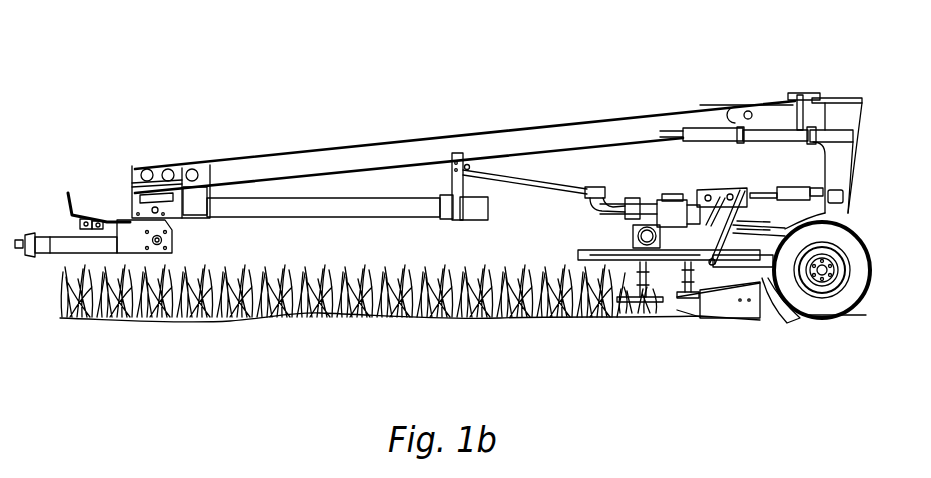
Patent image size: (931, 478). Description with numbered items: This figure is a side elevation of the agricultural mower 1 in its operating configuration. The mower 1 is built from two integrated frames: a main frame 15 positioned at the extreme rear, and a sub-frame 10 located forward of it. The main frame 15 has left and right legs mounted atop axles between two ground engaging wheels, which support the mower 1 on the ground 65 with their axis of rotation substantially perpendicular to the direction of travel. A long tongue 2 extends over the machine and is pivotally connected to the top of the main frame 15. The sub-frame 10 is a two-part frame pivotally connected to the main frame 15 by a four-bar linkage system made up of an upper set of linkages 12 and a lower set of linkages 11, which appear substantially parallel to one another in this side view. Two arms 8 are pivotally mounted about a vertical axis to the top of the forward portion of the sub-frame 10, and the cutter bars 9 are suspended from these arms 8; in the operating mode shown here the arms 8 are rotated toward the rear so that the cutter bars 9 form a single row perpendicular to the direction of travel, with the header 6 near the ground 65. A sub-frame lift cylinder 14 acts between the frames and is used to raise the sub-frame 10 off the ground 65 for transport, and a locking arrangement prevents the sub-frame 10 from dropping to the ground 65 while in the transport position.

The agricultural mower 1 is at (402, 70).
The tongue 2 is at (297, 163).
The header 6 is at (627, 217).
The arms 8 is at (681, 193).
The cutter bar 9 is at (646, 310).
The sub-frame 10 is at (713, 265).
The lower set of linkages 11 is at (763, 270).
The upper set of linkages 12 is at (845, 200).
The sub-frame lift cylinder 14 is at (793, 187).
The main frame 15 is at (840, 163).
The ground 65 is at (310, 296).